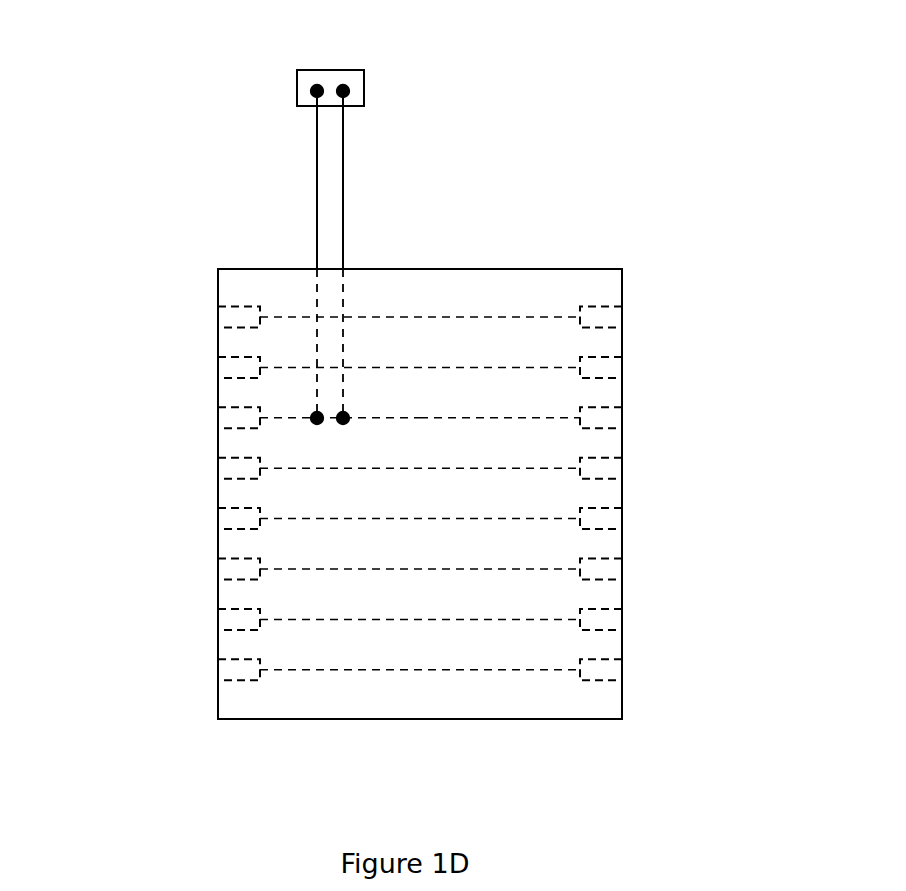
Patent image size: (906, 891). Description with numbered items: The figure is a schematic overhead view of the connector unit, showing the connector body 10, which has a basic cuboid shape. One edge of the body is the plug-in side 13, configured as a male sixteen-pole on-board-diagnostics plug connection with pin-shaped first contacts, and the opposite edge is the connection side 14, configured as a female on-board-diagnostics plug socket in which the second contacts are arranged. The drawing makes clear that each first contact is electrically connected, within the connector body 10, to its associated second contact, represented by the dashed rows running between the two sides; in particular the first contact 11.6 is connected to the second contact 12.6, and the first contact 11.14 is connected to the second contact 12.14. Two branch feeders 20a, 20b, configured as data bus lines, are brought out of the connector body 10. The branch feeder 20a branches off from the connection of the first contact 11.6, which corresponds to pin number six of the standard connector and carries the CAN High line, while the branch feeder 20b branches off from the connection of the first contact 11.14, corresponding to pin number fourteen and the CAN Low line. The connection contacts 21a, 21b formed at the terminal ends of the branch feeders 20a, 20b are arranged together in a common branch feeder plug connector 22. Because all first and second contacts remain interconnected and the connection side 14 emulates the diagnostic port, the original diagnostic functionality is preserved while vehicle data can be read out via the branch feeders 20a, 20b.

The connector body 10 is at (267, 706).
The plug-in side 13 is at (218, 543).
The connection side 14 is at (622, 494).
The first contact 11.6 is at (218, 418).
The first contact 11.14 is at (218, 419).
The second contact 12.6 is at (622, 418).
The second contact 12.14 is at (655, 418).
The branch feeder plug connector 22 is at (331, 70).
The connection contact 21a is at (297, 91).
The connection contact 21b is at (341, 81).
The branch feeder 20a is at (317, 180).
The branch feeder 20b is at (343, 172).